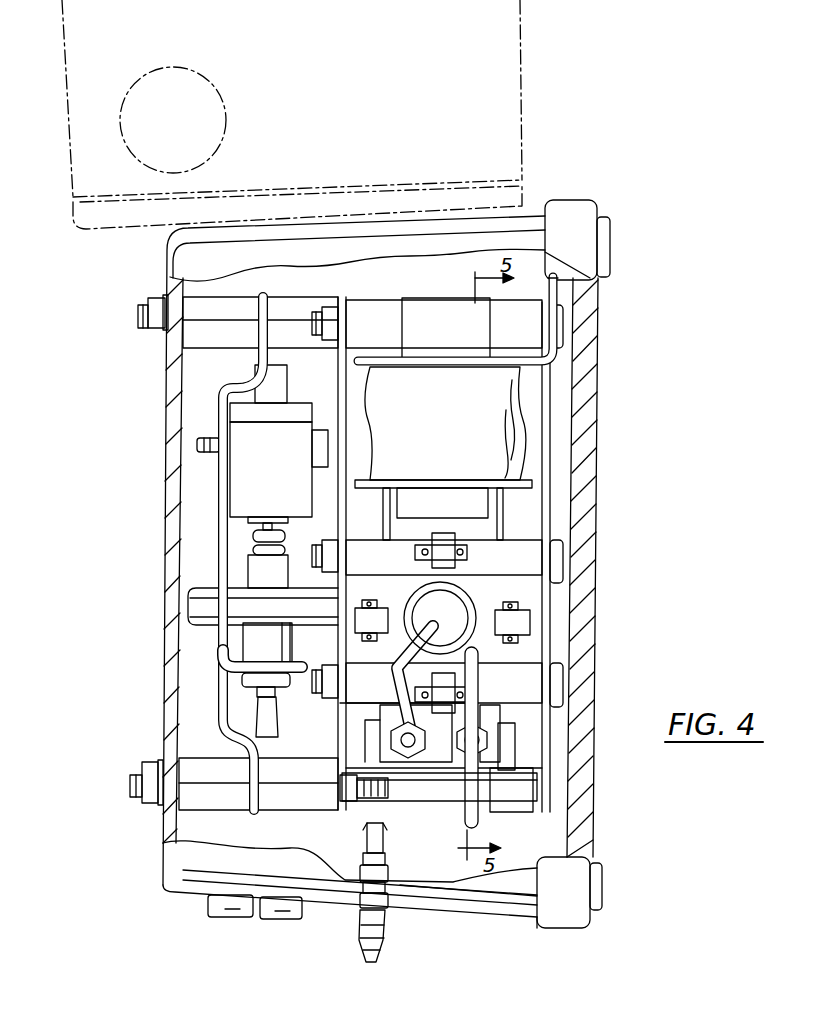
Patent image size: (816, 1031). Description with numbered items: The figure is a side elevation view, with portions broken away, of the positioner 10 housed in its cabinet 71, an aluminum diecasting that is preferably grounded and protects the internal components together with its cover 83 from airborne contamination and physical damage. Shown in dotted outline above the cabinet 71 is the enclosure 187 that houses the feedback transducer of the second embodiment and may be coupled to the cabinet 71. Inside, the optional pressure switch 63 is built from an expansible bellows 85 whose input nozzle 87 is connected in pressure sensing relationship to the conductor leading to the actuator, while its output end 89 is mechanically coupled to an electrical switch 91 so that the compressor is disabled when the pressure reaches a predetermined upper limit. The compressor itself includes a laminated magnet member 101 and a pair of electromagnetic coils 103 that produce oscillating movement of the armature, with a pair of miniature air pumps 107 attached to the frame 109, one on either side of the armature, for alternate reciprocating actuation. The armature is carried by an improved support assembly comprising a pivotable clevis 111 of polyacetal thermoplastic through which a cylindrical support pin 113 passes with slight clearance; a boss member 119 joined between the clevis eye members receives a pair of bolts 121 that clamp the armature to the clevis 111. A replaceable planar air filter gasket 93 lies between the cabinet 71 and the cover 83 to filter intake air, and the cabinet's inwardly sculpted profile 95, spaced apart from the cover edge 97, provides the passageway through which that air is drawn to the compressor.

The positioner 10 is at (443, 951).
The pressure switch 63 is at (245, 542).
The cabinet 71 is at (328, 898).
The cover 83 is at (580, 873).
The expansible bellows 85 is at (210, 620).
The input nozzle 87 is at (267, 712).
The output end 89 is at (285, 552).
The electrical switch 91 is at (272, 491).
The planar air filter gasket 93 is at (578, 535).
The inwardly sculpted profile 95 is at (520, 918).
The cover edge 97 is at (535, 927).
The laminated magnet member 101 is at (445, 282).
The electromagnetic coils 103 is at (455, 434).
The miniature air pumps 107 is at (498, 592).
The frame 109 is at (542, 635).
The pivotable clevis 111 is at (512, 805).
The cylindrical support pin 113 is at (412, 790).
The boss member 119 is at (507, 750).
The bolts 121 is at (395, 743).
The enclosure 187 is at (517, 85).